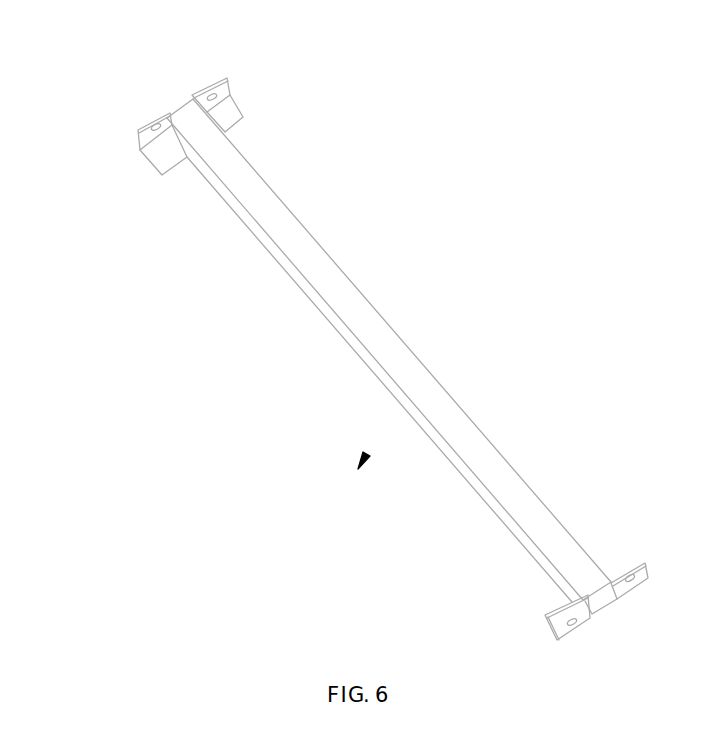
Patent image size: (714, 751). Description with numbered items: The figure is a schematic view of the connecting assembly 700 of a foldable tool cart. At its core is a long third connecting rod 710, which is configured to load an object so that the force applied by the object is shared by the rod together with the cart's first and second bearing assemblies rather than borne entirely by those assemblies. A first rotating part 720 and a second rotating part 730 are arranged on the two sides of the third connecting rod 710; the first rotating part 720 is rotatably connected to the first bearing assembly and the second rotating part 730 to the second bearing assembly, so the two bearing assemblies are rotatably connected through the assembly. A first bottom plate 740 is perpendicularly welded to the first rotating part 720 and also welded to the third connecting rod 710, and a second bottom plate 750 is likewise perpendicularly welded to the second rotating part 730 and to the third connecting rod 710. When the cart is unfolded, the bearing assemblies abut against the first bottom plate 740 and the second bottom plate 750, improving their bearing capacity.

The connecting assembly 700 is at (358, 470).
The third connecting rod 710 is at (184, 111).
The first rotating part 720 is at (138, 131).
The second rotating part 730 is at (228, 77).
The first bottom plate 740 is at (162, 176).
The second bottom plate 750 is at (244, 117).